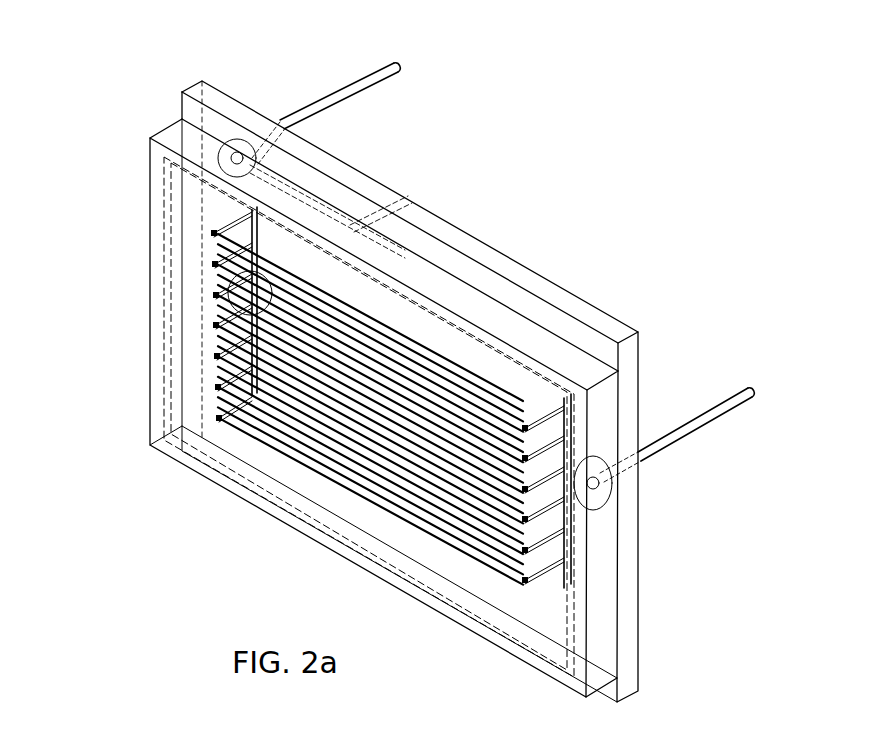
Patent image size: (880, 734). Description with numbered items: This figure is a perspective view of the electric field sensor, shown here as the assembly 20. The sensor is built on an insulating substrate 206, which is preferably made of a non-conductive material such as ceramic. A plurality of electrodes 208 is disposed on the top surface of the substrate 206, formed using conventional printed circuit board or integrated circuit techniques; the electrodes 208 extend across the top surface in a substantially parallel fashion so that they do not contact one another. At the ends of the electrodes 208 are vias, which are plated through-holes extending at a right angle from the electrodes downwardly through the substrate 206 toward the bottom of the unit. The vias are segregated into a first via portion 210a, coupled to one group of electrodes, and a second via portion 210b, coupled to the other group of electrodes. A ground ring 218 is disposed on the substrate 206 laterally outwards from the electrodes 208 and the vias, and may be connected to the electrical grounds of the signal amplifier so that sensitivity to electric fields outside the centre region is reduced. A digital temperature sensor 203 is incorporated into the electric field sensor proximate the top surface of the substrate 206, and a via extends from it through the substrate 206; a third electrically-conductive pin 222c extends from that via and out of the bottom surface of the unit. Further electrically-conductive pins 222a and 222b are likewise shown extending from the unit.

The flow cell assembly 20 is at (150, 563).
The digital temperature sensor 203 is at (235, 153).
The insulating substrate 206 is at (627, 324).
The electrodes 208 is at (461, 370).
The first via portion 210a is at (213, 230).
The second via portion 210b is at (542, 415).
The ground ring 218 is at (164, 242).
The internal passage 222a is at (410, 197).
The outlet tube 222b is at (714, 400).
The third electrically-conductive pin 222c is at (352, 80).